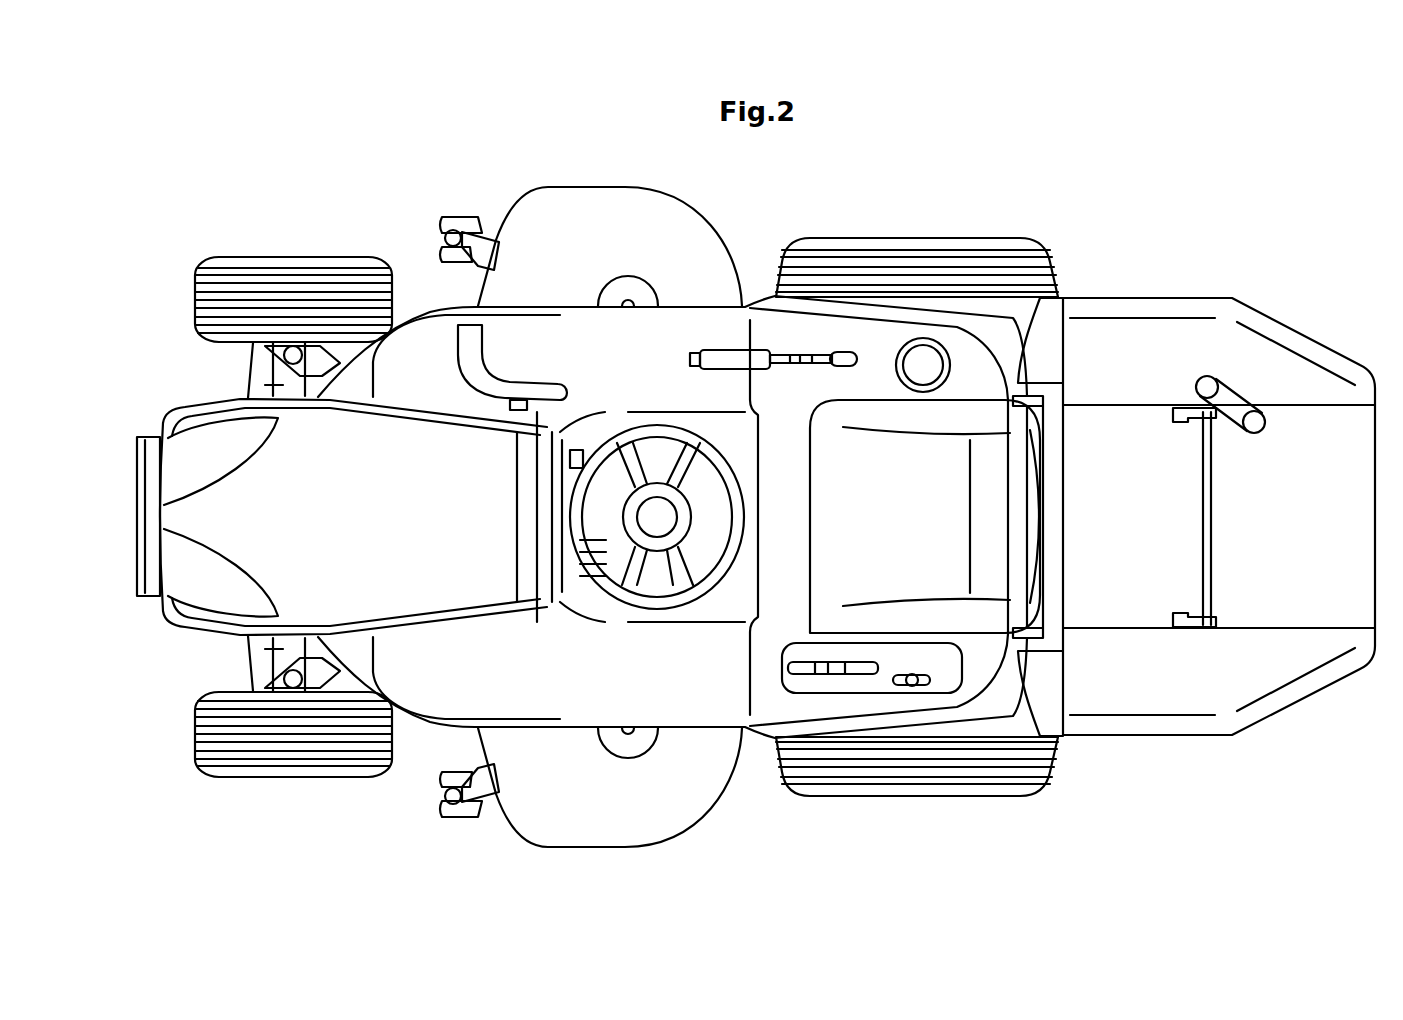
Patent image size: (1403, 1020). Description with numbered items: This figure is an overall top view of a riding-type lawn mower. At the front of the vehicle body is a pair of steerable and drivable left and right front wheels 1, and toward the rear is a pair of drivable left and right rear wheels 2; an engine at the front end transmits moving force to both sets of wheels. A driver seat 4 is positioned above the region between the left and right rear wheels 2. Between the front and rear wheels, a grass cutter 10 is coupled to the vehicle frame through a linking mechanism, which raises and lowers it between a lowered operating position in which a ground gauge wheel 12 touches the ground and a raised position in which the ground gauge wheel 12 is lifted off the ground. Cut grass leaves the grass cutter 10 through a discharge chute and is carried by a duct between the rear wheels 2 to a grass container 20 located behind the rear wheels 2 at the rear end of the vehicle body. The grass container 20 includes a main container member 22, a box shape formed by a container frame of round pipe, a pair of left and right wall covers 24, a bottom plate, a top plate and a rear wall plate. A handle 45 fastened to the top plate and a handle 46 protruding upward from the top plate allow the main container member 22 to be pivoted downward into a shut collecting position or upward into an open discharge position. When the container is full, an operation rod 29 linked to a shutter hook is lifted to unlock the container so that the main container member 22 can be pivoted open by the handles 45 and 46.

The front wheels 1 is at (268, 259).
The rear wheels 2 is at (903, 240).
The driver seat 4 is at (835, 525).
The grass cutter 10 is at (562, 185).
The ground gauge wheel 12 is at (1249, 724).
The grass container 20 is at (1323, 293).
The main container member 22 is at (1318, 617).
The wall covers 24 is at (1148, 325).
The operation rod 29 is at (1030, 384).
The handle 45 is at (1200, 505).
The handle 46 is at (1211, 378).